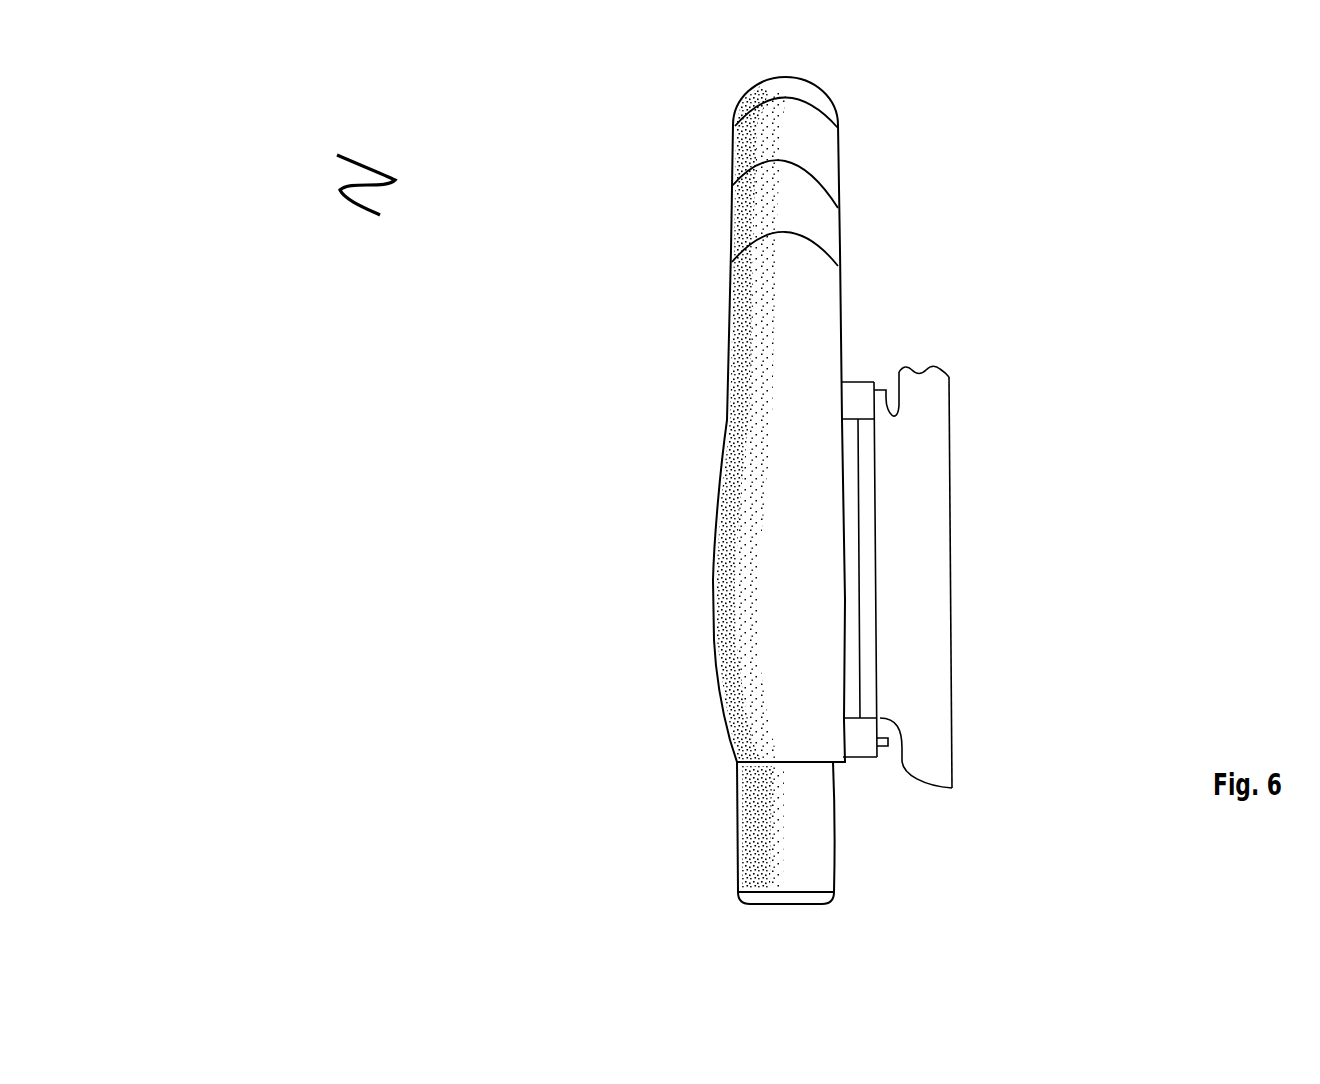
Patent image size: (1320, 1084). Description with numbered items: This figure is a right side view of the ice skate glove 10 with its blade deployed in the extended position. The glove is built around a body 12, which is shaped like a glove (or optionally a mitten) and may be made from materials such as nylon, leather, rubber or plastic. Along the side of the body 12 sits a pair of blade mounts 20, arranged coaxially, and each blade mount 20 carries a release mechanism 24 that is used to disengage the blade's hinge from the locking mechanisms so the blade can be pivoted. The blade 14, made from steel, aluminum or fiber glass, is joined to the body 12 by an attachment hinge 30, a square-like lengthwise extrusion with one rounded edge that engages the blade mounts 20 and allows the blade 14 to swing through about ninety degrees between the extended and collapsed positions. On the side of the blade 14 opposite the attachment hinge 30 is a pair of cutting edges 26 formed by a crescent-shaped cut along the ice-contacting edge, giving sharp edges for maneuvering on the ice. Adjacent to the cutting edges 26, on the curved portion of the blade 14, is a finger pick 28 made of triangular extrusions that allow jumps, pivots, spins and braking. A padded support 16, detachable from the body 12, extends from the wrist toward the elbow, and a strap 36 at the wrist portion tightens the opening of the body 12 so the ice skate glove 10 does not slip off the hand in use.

The ice skate glove 10 is at (341, 169).
The body 12 is at (687, 185).
The blade 14 is at (905, 523).
The padded support 16 is at (767, 813).
The blade mounts 20 is at (858, 398).
The release mechanism 24 is at (882, 390).
The pair of cutting edges 26 is at (953, 400).
The finger pick 28 is at (930, 363).
The attachment hinge 30 is at (868, 715).
The strap 36 is at (780, 903).